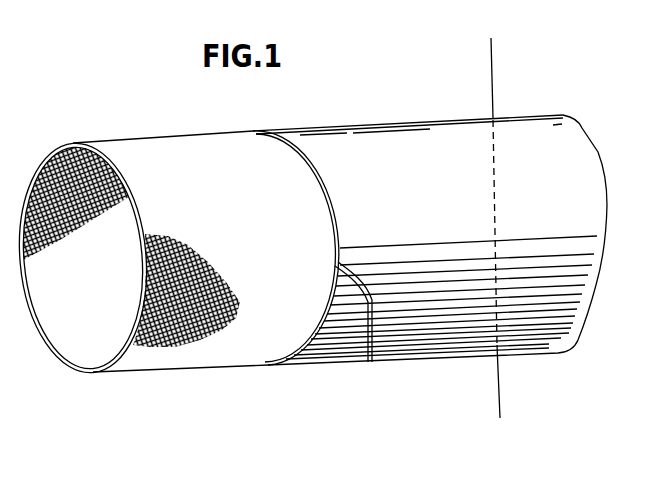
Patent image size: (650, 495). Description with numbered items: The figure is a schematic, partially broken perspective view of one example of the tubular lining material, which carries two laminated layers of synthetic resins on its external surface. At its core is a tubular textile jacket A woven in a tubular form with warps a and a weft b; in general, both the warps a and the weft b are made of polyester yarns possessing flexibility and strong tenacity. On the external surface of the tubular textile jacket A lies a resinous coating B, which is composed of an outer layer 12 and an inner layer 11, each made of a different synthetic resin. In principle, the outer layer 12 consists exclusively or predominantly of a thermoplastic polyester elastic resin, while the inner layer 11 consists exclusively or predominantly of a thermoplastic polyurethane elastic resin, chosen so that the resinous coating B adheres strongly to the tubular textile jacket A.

The tubular textile jacket A is at (244, 345).
The resinous coating B is at (430, 286).
The inner layer 11 is at (437, 398).
The outer layer 12 is at (427, 347).
The warps a is at (196, 255).
The weft b is at (183, 243).